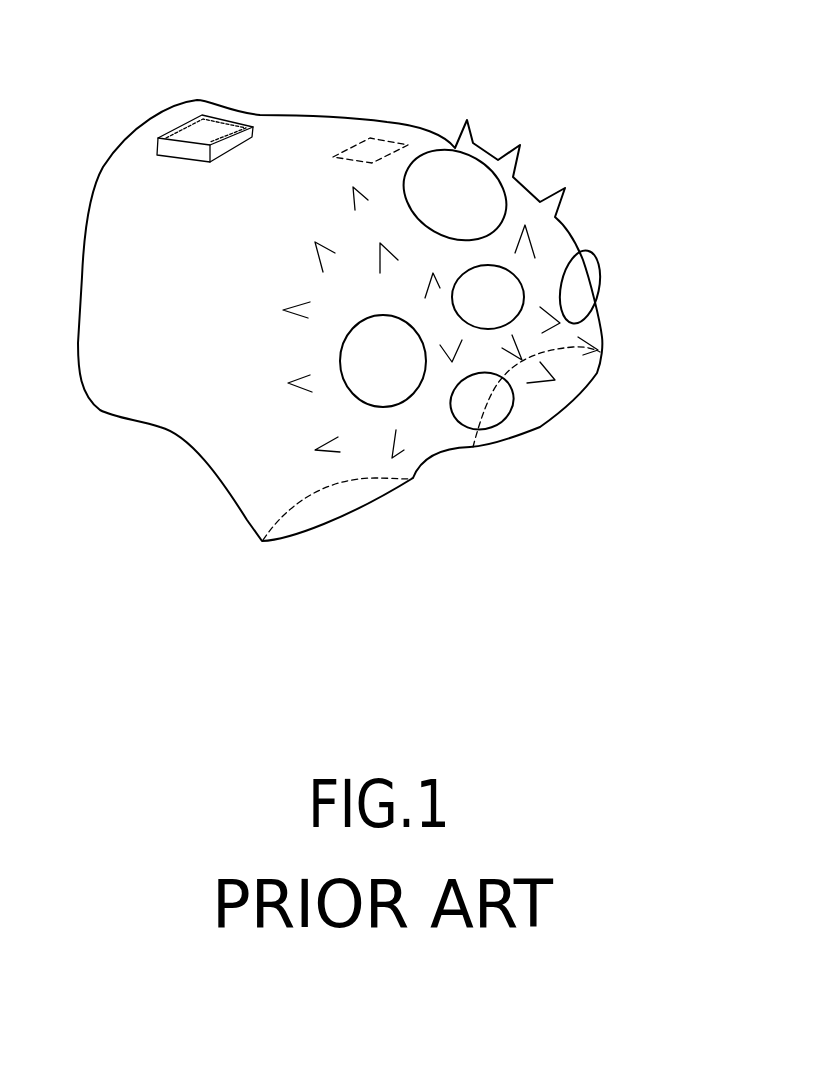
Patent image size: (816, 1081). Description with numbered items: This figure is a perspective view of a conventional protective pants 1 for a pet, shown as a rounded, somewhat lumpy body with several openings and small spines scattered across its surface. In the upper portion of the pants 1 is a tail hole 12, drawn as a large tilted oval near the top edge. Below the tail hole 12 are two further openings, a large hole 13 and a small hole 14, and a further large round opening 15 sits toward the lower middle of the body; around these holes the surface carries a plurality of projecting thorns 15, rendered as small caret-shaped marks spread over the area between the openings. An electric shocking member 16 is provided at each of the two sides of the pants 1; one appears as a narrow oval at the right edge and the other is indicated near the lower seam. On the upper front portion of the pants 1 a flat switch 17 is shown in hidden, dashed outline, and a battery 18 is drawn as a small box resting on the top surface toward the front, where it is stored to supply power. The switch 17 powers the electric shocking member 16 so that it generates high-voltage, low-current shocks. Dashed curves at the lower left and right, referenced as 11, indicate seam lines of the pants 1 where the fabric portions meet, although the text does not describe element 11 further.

The protective pants 1 is at (132, 375).
The seam line 11 is at (347, 505).
The tail hole 12 is at (465, 195).
The large hole 13 is at (497, 295).
The small hole 14 is at (498, 412).
The projecting thorns 15 is at (400, 358).
The electric shocking member 16 is at (580, 288).
The flat switch 17 is at (372, 147).
The battery 18 is at (210, 135).